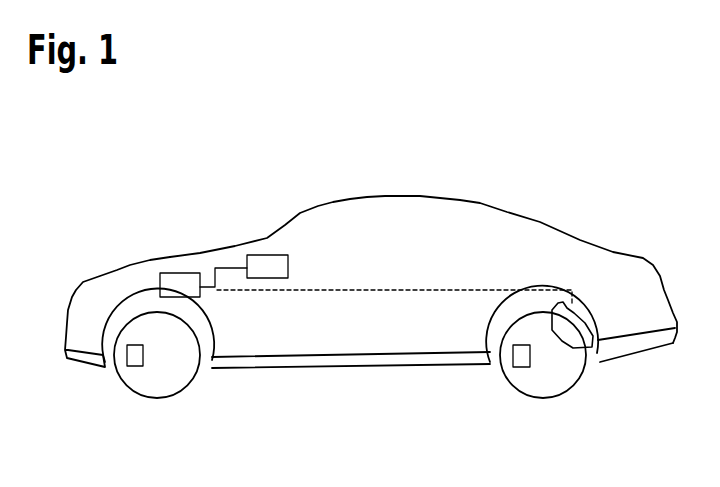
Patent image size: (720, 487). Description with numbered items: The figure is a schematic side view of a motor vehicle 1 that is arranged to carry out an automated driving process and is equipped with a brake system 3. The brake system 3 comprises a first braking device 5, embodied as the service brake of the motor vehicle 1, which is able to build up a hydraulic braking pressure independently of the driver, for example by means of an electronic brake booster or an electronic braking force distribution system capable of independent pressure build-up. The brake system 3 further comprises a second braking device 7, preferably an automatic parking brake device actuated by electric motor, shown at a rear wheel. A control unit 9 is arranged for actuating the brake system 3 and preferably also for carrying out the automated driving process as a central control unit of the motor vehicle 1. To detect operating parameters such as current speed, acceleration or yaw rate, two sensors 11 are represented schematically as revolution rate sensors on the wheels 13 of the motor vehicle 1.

The motor vehicle 1 is at (588, 171).
The brake system 3 is at (235, 228).
The first braking device 5 is at (178, 273).
The second braking device 7 is at (585, 362).
The control unit 9 is at (267, 256).
The sensor 11 is at (133, 366).
The wheel 13 is at (167, 398).